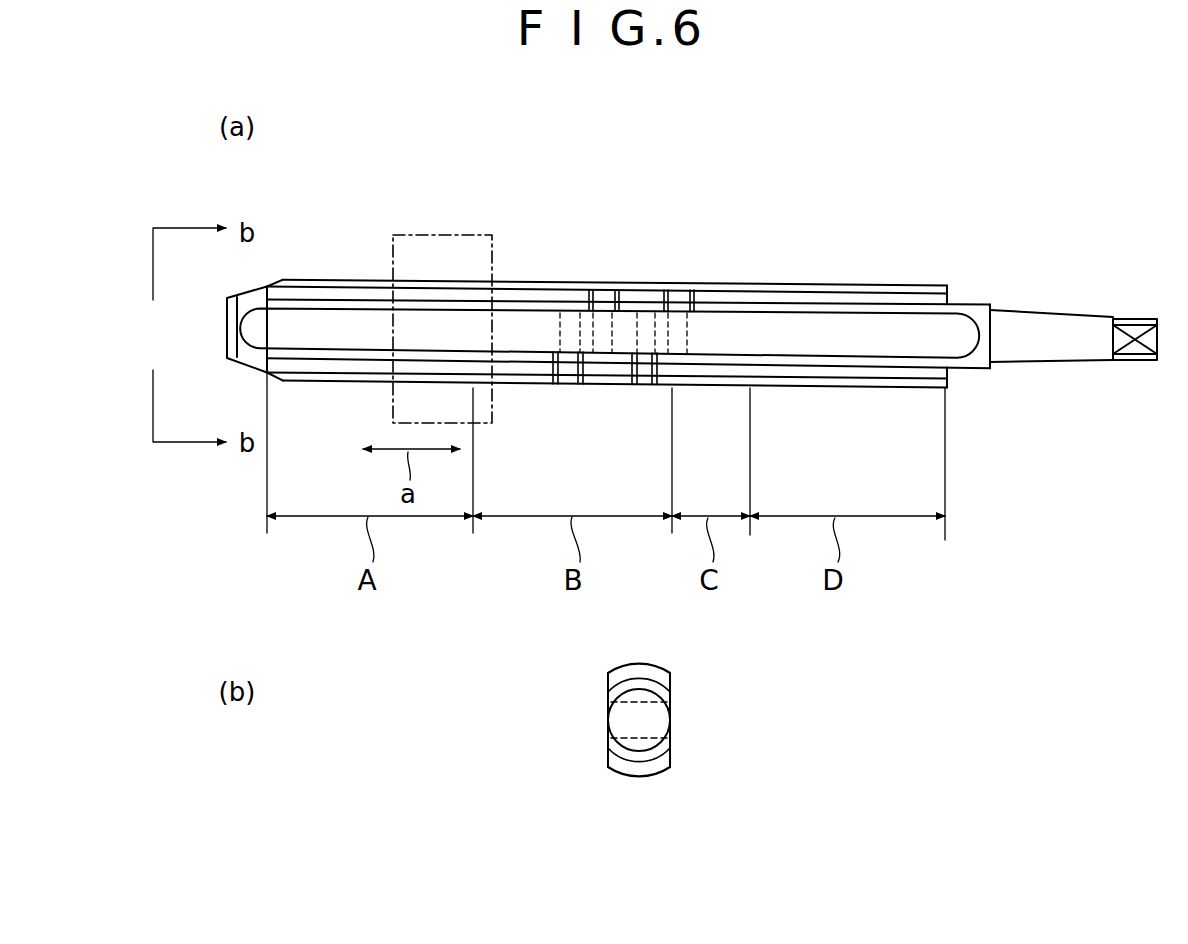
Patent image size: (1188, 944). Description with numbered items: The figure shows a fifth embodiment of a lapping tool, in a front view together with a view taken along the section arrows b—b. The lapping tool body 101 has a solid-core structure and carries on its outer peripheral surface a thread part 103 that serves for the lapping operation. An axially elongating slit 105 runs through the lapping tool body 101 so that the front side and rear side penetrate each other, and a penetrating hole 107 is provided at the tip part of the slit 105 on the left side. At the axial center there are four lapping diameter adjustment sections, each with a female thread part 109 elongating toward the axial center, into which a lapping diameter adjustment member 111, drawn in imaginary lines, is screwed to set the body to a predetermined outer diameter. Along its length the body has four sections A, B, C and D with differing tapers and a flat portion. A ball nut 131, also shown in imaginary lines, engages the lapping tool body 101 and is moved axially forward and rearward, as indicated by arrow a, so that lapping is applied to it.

The lapping tool body 101 is at (774, 283).
The thread part 103 is at (877, 285).
The slit 105 is at (873, 358).
The penetrating hole 107 is at (243, 328).
The female thread part 109 is at (596, 290).
The lapping diameter adjustment member 111 is at (557, 340).
The ball nut 131 is at (413, 234).